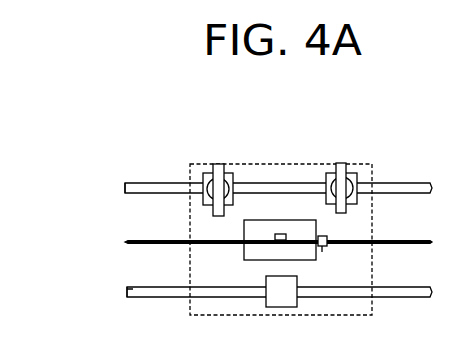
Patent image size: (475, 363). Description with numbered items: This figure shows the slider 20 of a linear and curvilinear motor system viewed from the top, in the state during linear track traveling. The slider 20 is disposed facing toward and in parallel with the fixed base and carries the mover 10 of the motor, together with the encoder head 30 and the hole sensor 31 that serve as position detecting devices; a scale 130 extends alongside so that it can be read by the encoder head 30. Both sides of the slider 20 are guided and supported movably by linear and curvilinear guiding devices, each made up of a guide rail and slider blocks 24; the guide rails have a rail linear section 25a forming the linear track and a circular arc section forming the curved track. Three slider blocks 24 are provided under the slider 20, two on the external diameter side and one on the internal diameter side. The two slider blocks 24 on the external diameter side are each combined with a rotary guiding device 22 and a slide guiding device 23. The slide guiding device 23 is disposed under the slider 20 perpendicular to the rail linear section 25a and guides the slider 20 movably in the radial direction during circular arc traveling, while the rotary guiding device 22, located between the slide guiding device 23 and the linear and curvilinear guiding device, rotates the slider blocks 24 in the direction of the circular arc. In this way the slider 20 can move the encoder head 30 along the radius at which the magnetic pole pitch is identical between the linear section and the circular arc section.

The mover 10 is at (320, 220).
The slider 20 is at (367, 164).
The rotary guiding device 22 is at (202, 181).
The slide guiding device 23 is at (215, 165).
The slider block 24 is at (210, 173).
The rail linear section 25a is at (125, 184).
The encoder head 30 is at (279, 233).
The hole sensor 31 is at (323, 247).
The scale 130 is at (143, 241).